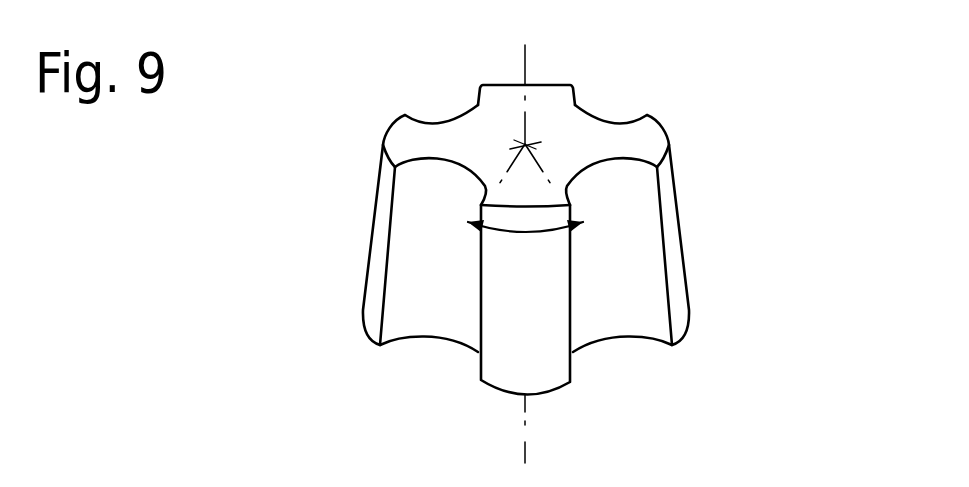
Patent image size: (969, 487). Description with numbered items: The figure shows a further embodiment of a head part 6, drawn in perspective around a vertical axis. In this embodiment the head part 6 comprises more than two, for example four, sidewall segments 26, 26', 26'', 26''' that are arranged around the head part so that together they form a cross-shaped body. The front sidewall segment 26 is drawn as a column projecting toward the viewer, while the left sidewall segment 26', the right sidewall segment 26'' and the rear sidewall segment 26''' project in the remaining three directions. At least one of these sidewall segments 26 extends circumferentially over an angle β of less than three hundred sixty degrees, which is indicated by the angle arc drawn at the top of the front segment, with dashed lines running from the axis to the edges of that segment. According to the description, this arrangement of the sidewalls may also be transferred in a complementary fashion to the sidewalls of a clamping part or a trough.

The head part 6 is at (635, 92).
The sidewall segment 26 is at (505, 321).
The sidewall segment 26' is at (399, 248).
The sidewall segment 26'' is at (685, 248).
The sidewall segment 26''' is at (521, 63).